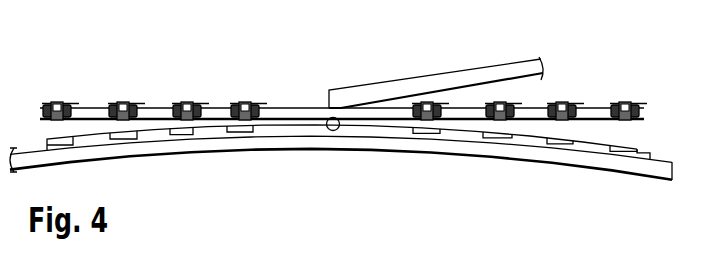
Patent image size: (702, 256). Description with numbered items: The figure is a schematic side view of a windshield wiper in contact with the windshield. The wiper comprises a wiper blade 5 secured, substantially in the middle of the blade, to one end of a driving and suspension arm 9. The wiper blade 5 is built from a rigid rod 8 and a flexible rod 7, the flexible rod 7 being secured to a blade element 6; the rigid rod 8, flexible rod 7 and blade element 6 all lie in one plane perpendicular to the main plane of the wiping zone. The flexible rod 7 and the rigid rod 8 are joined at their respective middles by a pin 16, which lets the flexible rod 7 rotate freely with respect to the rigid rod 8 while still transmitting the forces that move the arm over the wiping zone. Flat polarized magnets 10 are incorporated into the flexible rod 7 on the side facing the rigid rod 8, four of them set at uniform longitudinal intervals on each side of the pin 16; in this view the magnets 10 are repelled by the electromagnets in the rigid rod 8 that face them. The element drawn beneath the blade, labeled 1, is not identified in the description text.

The support beam 1 is at (345, 146).
The wiper blade 5 is at (654, 107).
The blade element 6 is at (630, 193).
The flexible rod 7 is at (648, 156).
The rigid rod 8 is at (588, 107).
The driving and suspension arm 9 is at (462, 75).
The polarized magnets 10 is at (425, 130).
The pin 16 is at (327, 127).